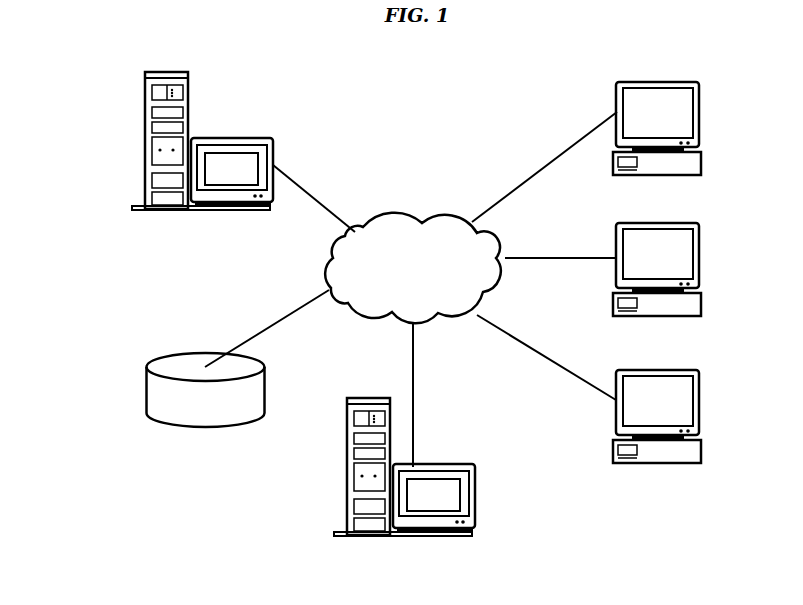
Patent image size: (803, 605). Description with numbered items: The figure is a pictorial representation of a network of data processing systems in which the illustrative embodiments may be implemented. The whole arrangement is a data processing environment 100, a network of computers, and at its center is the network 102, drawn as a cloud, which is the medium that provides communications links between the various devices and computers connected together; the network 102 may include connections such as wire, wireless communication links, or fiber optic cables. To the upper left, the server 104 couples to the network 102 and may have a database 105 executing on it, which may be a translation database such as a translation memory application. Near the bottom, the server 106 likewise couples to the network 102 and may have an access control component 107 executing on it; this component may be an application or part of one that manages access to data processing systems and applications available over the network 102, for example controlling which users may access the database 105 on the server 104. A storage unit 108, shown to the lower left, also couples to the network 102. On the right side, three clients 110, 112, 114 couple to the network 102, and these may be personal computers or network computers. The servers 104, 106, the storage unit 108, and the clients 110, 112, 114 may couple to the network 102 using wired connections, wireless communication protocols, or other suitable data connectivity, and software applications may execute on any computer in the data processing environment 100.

The data processing environment 100 is at (96, 95).
The network 102 is at (401, 285).
The server 104 is at (245, 231).
The database 105 is at (203, 111).
The server 106 is at (447, 557).
The access control component 107 is at (462, 493).
The storage unit 108 is at (193, 421).
The client 110 is at (698, 335).
The client 112 is at (698, 482).
The client 114 is at (698, 194).